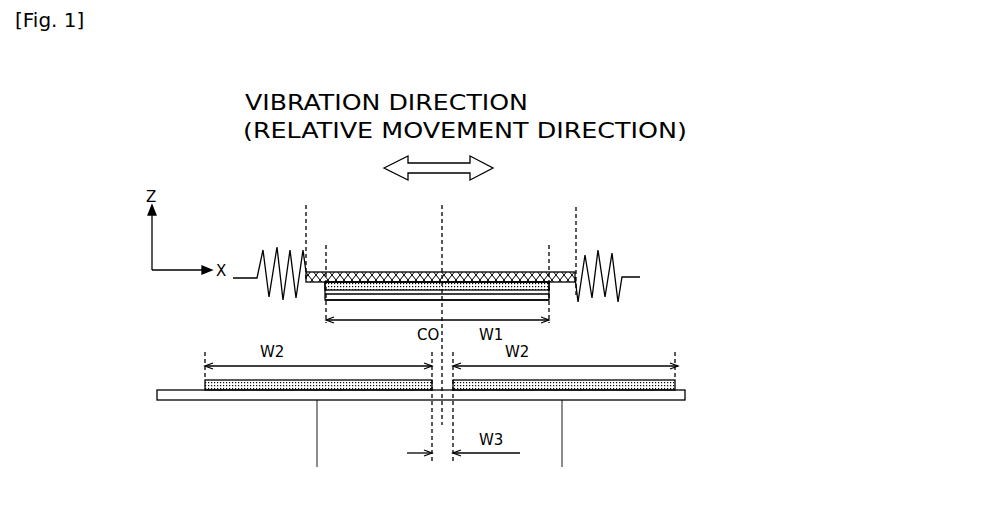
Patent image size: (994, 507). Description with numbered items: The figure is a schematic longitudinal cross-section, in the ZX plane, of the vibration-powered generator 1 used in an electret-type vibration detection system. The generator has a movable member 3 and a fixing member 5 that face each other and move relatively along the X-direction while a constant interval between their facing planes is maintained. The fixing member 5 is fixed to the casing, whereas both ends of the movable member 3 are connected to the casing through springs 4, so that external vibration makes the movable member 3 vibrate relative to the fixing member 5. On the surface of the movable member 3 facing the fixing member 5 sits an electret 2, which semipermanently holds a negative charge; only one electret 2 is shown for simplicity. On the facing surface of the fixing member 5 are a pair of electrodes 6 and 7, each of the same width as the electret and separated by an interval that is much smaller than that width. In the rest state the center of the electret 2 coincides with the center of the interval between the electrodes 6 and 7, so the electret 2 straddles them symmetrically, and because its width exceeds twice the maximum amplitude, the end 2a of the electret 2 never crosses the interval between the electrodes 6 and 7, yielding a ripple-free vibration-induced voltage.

The vibration-powered generator 1 is at (112, 382).
The electret 2 is at (323, 297).
The end of the electret 2a is at (549, 297).
The movable member 3 is at (367, 271).
The springs 4 is at (277, 246).
The fixing member 5 is at (687, 393).
The electrode 6 is at (235, 391).
The electrode 7 is at (627, 391).